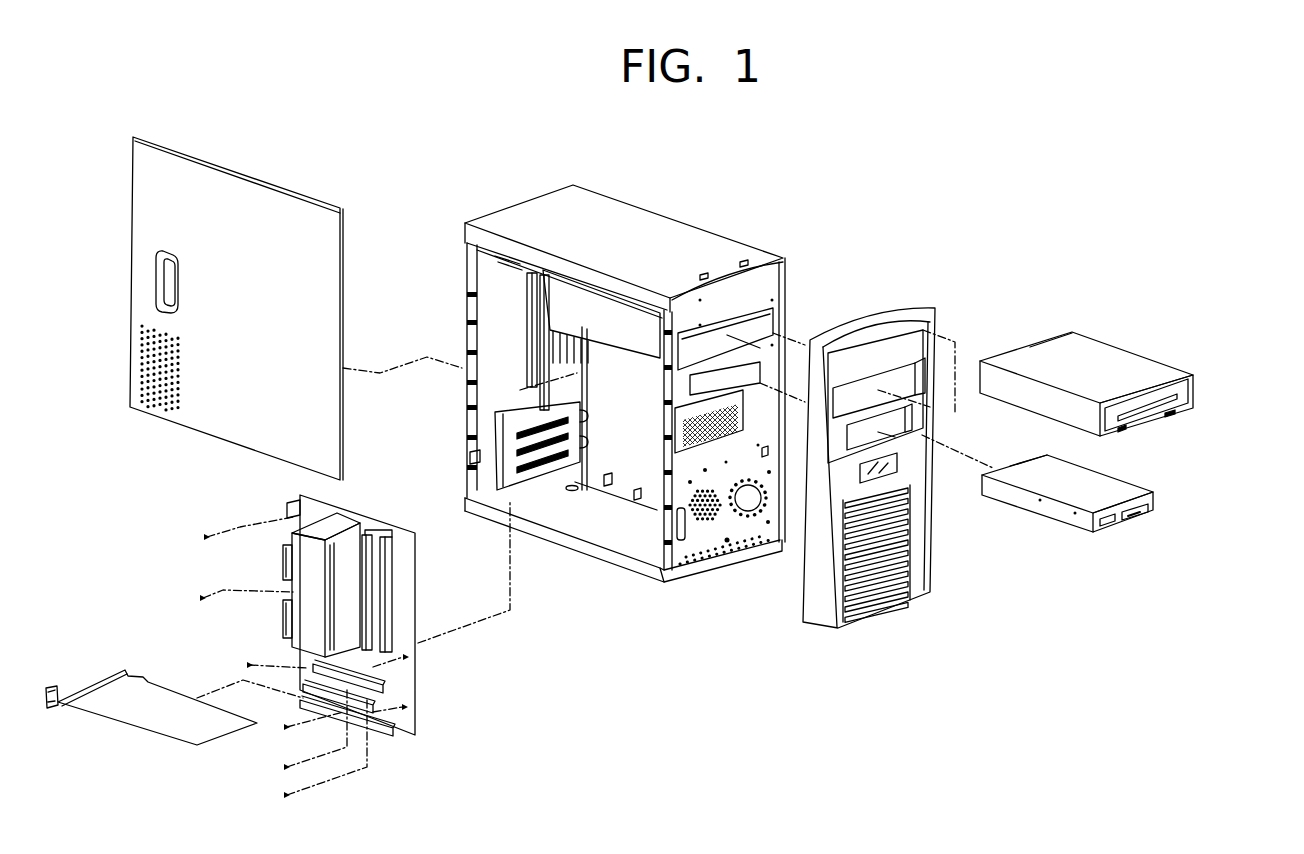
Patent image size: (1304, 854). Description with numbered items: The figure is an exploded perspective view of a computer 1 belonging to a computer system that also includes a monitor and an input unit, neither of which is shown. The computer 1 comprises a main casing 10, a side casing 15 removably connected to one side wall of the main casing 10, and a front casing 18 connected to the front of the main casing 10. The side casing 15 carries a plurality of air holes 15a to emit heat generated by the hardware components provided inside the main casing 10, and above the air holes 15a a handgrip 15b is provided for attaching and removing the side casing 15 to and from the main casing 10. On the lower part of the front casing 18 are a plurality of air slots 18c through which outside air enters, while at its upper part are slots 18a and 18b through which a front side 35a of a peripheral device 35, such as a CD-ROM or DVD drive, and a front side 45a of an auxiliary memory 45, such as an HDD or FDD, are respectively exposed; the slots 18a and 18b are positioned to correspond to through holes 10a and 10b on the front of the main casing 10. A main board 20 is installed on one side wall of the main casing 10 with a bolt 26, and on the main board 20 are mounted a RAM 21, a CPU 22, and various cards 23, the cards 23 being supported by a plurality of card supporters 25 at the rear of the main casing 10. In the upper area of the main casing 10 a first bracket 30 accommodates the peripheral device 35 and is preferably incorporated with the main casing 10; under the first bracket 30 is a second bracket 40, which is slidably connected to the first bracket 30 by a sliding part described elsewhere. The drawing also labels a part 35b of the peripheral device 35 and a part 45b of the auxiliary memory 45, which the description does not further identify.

The computer 1 is at (884, 135).
The main casing 10 is at (626, 378).
The through hole 10a is at (728, 335).
The through hole 10b is at (745, 366).
The side casing 15 is at (258, 308).
The air holes 15a is at (140, 383).
The handgrip 15b is at (165, 293).
The front casing 18 is at (898, 488).
The slot 18a is at (907, 370).
The slot 18b is at (892, 432).
The air slots 18c is at (907, 573).
The main board 20 is at (344, 646).
The RAM 21 is at (380, 592).
The CPU 22 is at (285, 563).
The cards 23 is at (140, 737).
The card supporters 25 is at (493, 445).
The bolt 26 is at (250, 665).
The first bracket 30 is at (553, 292).
The peripheral device 35 is at (1127, 360).
The front side of peripheral device 35a is at (1195, 394).
The guide of CD-ROM drive 35b is at (1050, 337).
The second bracket 40 is at (555, 348).
The auxiliary memory 45 is at (1100, 468).
The front side of auxiliary memory 45a is at (1157, 504).
The guide of floppy disk drive 45b is at (1008, 455).